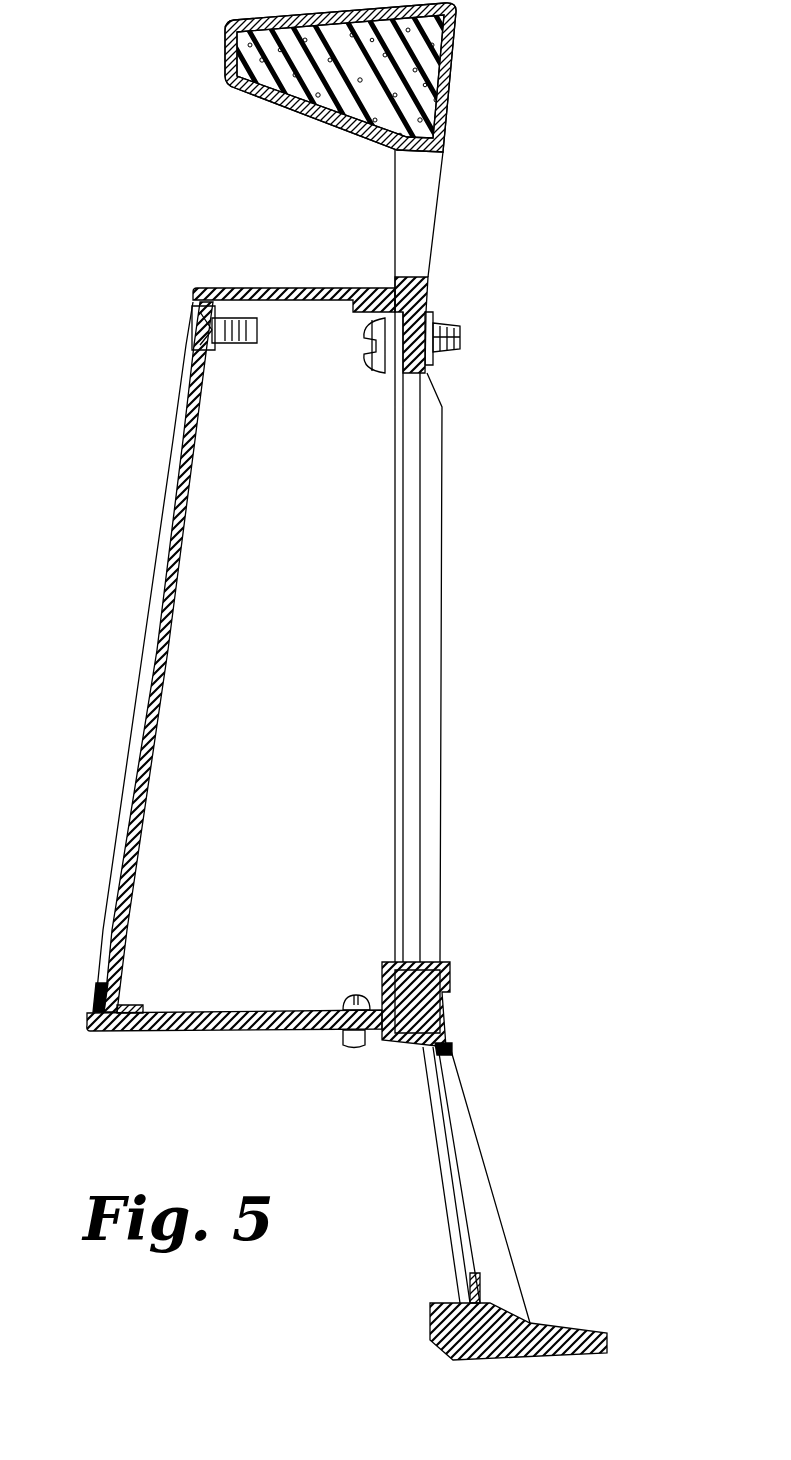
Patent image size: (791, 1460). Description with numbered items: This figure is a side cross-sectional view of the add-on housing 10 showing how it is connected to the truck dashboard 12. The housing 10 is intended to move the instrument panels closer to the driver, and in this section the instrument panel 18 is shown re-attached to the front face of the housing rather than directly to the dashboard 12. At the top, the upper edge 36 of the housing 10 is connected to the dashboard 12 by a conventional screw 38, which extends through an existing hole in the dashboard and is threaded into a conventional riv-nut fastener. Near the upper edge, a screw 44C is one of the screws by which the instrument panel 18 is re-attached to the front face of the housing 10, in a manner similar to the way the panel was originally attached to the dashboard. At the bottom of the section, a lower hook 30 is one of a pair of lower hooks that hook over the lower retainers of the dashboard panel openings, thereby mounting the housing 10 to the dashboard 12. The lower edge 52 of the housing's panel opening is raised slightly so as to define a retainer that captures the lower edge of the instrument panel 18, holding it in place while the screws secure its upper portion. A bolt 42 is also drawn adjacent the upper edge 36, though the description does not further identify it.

The add-on housing 10 is at (162, 508).
The dashboard 12 is at (225, 64).
The instrument panel 18 is at (168, 602).
The lower hook 30 is at (440, 960).
The upper edge 36 is at (425, 294).
The screw 38 is at (377, 362).
The bolt 42 is at (455, 322).
The screw 44C is at (190, 318).
The lower edge of panel opening 52 is at (82, 1012).